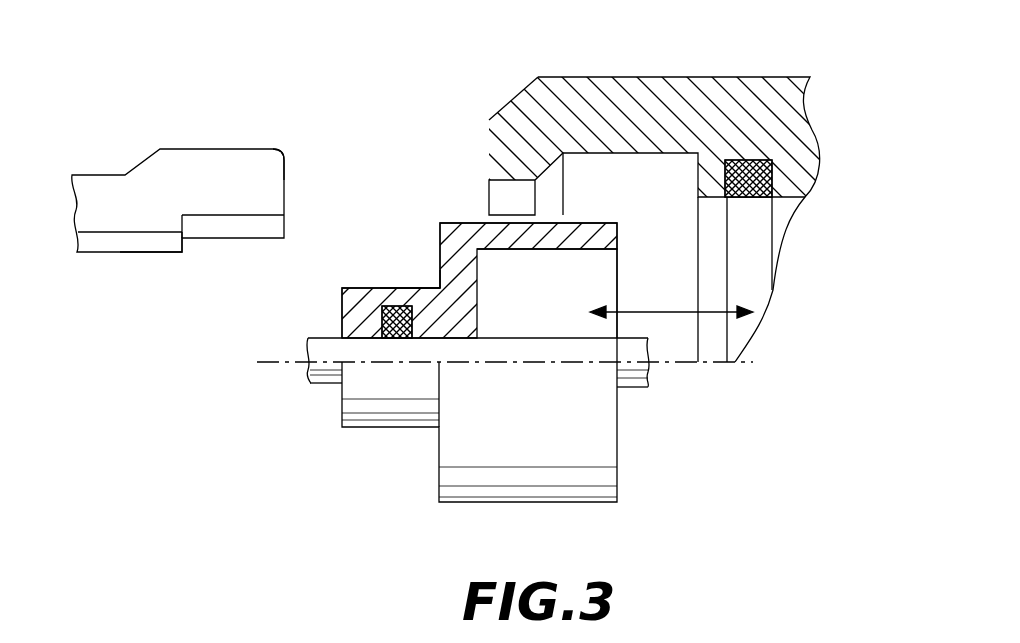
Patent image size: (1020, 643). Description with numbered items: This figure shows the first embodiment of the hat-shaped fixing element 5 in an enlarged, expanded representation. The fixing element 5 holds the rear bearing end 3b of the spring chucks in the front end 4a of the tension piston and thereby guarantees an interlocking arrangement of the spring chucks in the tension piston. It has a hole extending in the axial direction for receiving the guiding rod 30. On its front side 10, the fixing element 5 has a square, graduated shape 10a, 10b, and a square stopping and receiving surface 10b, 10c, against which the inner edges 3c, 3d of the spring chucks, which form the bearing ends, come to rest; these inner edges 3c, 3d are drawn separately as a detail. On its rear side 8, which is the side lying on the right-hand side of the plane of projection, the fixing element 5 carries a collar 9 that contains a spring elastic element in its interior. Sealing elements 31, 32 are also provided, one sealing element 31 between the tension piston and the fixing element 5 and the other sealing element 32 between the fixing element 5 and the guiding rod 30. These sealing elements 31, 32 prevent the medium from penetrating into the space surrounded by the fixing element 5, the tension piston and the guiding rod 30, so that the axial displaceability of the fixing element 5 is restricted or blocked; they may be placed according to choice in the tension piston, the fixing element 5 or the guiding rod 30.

The rear bearing end 3b is at (193, 182).
The inner edge 3c is at (223, 232).
The inner edge 3d is at (287, 170).
The front end of the tension piston 4a is at (575, 120).
The hat-shaped fixing element 5 is at (605, 460).
The rear side 8 is at (790, 361).
The collar 9 is at (606, 237).
The front side 10 is at (235, 360).
The square graduated shape 10a is at (340, 313).
The square graduated shape / stopping and receiving surface 10b is at (393, 290).
The square stopping and receiving surface 10c is at (440, 248).
The guiding rod 30 is at (647, 387).
The sealing element 31 is at (770, 197).
The sealing element 32 is at (388, 338).